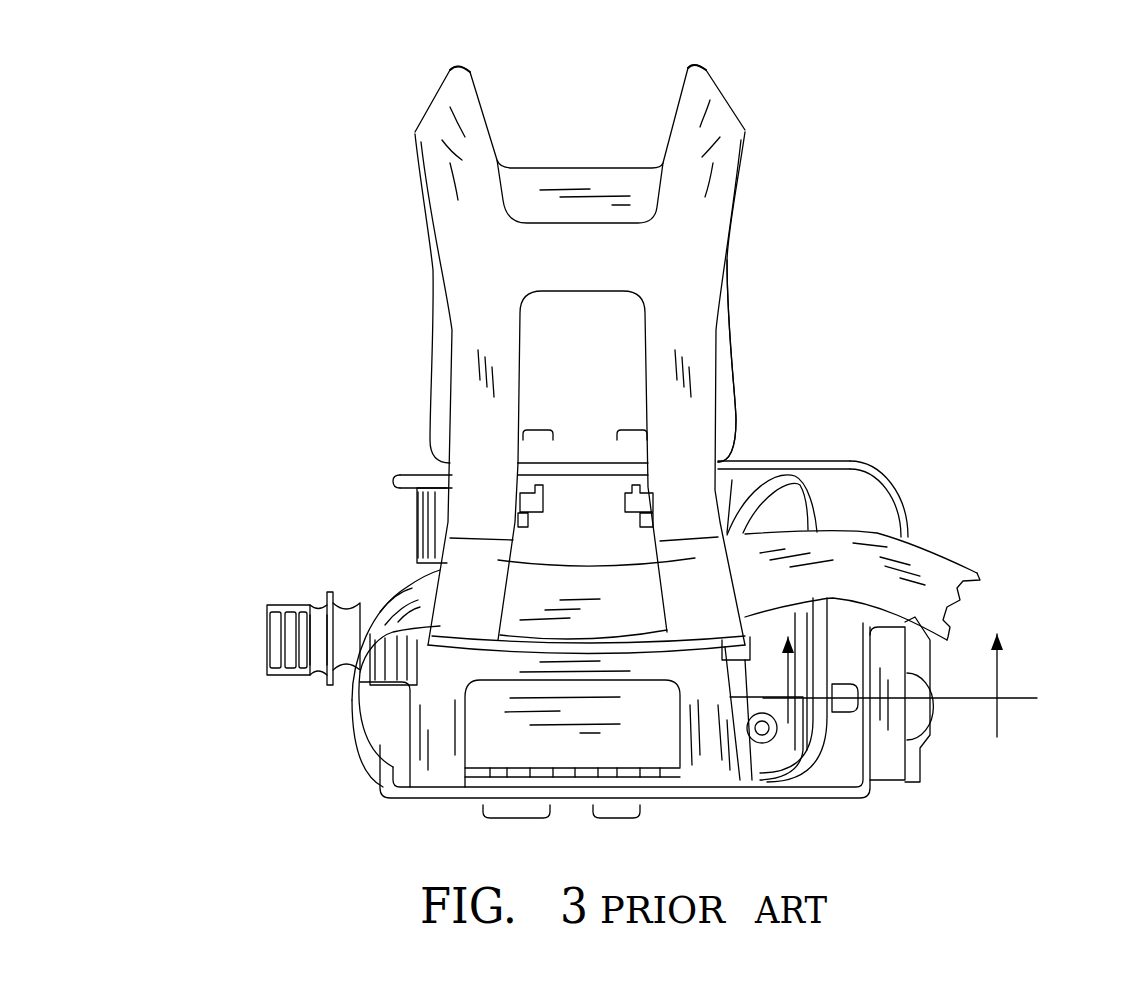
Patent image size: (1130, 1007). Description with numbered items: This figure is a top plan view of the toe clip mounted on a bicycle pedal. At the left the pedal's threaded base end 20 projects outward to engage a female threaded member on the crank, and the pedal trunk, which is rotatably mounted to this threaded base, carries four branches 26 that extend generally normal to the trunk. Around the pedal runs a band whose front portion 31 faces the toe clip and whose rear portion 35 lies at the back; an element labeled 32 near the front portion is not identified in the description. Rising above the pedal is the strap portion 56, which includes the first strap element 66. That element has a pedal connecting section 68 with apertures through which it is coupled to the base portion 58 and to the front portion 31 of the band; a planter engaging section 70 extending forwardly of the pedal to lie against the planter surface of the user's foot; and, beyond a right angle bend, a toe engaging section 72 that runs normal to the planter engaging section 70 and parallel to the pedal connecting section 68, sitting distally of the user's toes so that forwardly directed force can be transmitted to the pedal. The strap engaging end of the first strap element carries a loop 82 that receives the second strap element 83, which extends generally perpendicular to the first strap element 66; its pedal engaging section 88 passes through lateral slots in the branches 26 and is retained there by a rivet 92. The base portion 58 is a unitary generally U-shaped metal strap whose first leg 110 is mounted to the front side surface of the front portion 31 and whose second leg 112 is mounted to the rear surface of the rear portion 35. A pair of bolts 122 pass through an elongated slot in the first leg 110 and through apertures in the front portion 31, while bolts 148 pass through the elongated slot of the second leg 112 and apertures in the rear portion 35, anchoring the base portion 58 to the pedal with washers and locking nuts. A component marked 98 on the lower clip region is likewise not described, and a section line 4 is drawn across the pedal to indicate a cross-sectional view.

The threaded base end 20 is at (285, 605).
The branches 26 is at (430, 743).
The front portion 31 is at (396, 480).
The mounting plate 32 is at (402, 474).
The rear portion 35 is at (387, 799).
The strap portion 56 is at (808, 155).
The base portion 58 is at (897, 481).
The first strap element 66 is at (743, 296).
The pedal connecting section 68 is at (583, 453).
The planter engaging section 70 is at (728, 413).
The toe engaging section 72 is at (682, 78).
The loop 82 is at (695, 558).
The second strap element 83 is at (966, 552).
The pedal engaging section 88 is at (480, 747).
The rivet 92 is at (762, 745).
The lower clip band 98 is at (535, 582).
The first leg 110 is at (800, 462).
The second leg 112 is at (842, 806).
The bolts 122 is at (532, 437).
The bolts 148 is at (617, 816).
The section line 4- 4 is at (900, 685).